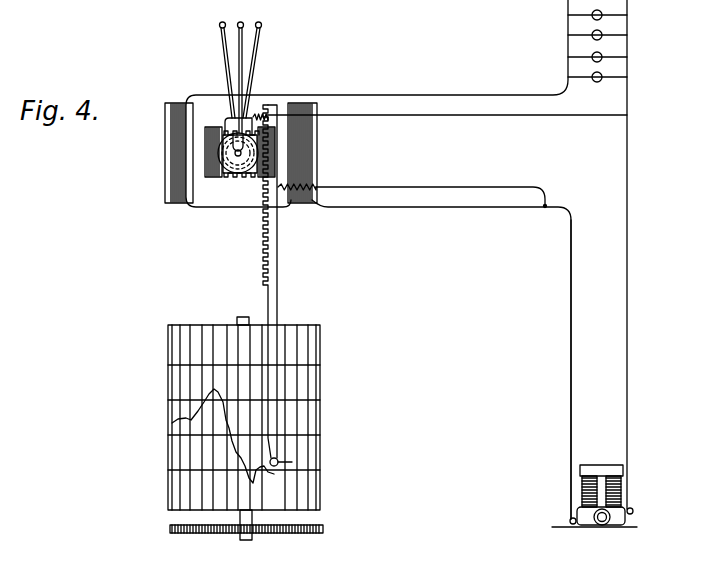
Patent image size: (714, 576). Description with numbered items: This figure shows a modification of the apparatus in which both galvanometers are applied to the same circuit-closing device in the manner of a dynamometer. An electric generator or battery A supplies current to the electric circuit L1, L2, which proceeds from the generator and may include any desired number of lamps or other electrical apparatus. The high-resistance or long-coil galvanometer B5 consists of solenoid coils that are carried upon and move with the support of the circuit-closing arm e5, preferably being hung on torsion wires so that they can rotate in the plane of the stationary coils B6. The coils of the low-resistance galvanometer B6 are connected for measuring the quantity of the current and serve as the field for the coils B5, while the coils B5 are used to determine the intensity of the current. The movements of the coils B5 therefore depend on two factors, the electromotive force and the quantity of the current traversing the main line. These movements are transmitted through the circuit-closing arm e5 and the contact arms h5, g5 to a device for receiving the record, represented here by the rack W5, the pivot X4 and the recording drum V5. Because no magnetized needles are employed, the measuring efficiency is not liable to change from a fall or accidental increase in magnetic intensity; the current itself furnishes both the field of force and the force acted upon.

The contact pin h5 is at (219, 61).
The circuit-closing arm e5 is at (240, 68).
The contact pin g5 is at (263, 62).
The low-resistance galvanometer coils B6 is at (325, 150).
The high-resistance or long-coil galvanometer B5 is at (206, 185).
The rack W5 is at (266, 287).
The recording drum V5 is at (255, 428).
The pen pivot X4 is at (286, 458).
The electric circuit L1 is at (566, 372).
The electric circuit L2 is at (600, 257).
The electric generator or battery A is at (594, 486).